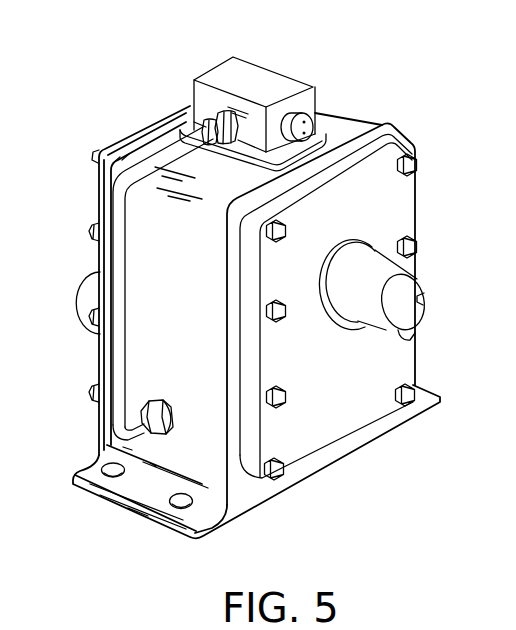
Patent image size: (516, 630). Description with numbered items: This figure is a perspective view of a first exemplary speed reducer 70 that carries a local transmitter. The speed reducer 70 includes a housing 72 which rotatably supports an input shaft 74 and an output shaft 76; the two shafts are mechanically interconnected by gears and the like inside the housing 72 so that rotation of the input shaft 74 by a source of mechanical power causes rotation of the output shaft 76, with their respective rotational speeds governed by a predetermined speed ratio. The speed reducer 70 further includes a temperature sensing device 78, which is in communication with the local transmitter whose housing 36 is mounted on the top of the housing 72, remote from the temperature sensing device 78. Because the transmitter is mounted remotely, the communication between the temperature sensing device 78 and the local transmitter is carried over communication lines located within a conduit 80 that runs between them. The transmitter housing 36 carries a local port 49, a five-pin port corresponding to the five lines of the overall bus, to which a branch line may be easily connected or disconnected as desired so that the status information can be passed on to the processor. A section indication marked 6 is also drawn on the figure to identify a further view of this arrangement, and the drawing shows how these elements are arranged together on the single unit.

The speed reducer 70 is at (401, 58).
The housing 72 is at (358, 124).
The input shaft 74 is at (78, 300).
The output shaft 76 is at (413, 312).
The temperature sensing device 78 is at (174, 400).
The conduit 80 is at (113, 261).
The housing 36 is at (271, 83).
The local port 49 is at (298, 117).
The section line 6- 6 is at (163, 390).